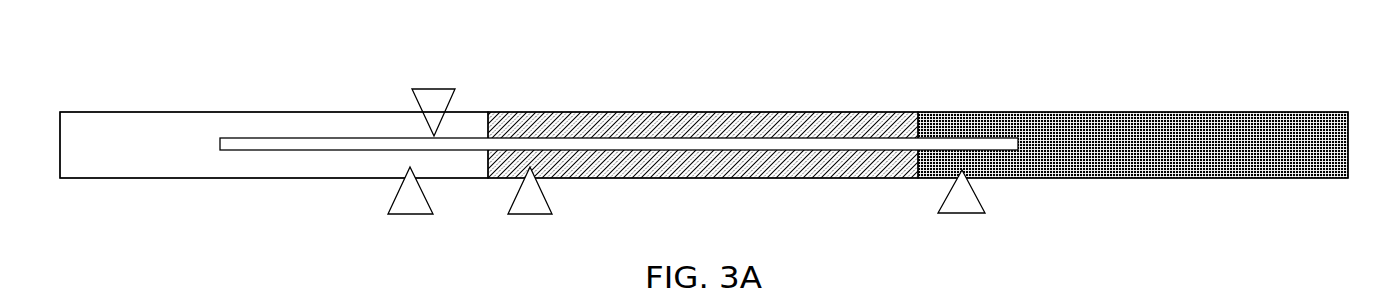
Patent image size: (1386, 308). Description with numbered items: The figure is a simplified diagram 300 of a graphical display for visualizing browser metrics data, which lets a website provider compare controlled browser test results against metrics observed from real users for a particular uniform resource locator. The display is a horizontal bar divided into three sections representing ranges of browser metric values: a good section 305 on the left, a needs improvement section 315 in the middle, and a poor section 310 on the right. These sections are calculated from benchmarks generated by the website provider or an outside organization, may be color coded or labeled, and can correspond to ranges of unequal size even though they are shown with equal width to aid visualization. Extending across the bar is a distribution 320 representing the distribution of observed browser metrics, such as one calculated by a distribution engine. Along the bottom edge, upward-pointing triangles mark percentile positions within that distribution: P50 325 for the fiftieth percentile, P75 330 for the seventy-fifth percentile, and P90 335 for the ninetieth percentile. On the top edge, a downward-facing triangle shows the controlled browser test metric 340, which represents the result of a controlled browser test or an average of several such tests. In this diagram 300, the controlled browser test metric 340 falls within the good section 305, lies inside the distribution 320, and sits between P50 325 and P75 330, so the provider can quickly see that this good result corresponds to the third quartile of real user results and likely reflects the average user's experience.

The diagram 300 is at (118, 58).
The good section 305 is at (272, 108).
The poor section 310 is at (1132, 108).
The needs improvement section 315 is at (707, 108).
The distribution 320 is at (299, 151).
The P50 325 is at (386, 219).
The P75 330 is at (557, 218).
The P90 335 is at (990, 218).
The controlled browser test metric 340 is at (462, 83).